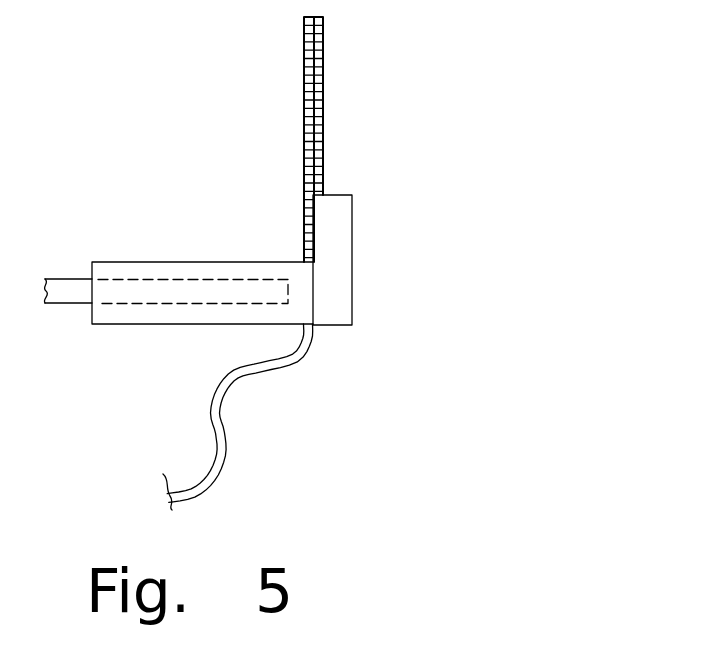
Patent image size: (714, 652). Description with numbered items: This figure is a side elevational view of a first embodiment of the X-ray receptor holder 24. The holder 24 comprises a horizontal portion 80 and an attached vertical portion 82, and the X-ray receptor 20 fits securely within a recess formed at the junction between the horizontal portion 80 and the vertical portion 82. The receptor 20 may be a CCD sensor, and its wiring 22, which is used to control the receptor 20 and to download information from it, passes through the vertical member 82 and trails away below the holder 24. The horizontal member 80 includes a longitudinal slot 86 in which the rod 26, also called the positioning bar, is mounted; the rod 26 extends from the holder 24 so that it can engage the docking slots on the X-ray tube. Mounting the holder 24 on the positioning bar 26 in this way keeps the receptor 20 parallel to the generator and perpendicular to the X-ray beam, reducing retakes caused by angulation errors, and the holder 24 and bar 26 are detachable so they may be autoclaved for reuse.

The X-ray receptor 20 is at (323, 73).
The wiring 22 is at (224, 441).
The receptor holder 24 is at (385, 222).
The rod 26 is at (63, 307).
The horizontal portion 80 is at (185, 325).
The vertical portion 82 is at (352, 262).
The longitudinal slot 86 is at (140, 303).